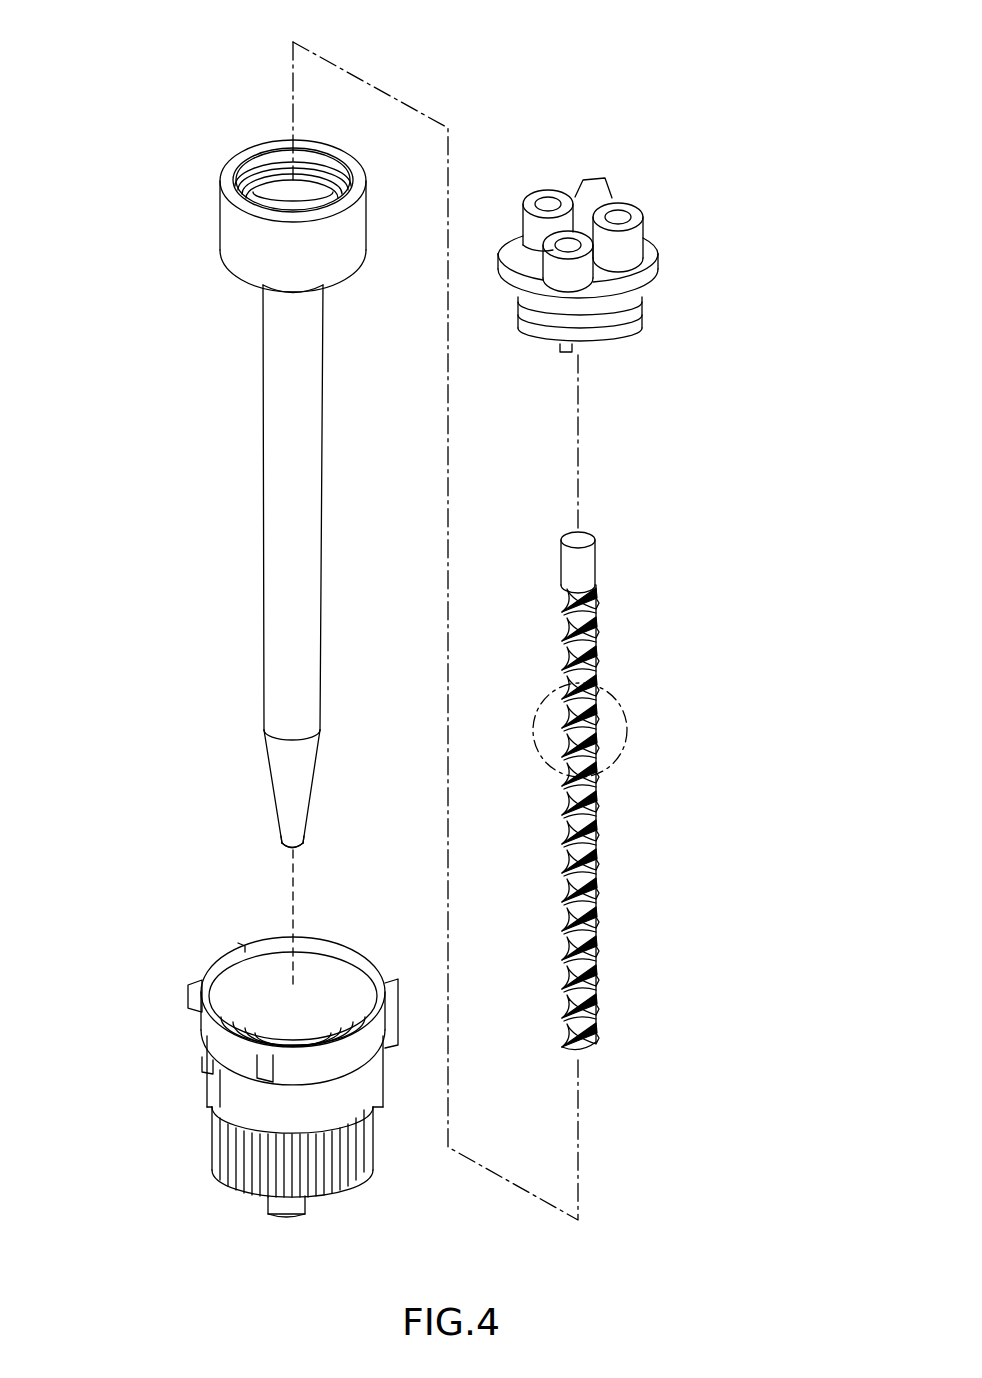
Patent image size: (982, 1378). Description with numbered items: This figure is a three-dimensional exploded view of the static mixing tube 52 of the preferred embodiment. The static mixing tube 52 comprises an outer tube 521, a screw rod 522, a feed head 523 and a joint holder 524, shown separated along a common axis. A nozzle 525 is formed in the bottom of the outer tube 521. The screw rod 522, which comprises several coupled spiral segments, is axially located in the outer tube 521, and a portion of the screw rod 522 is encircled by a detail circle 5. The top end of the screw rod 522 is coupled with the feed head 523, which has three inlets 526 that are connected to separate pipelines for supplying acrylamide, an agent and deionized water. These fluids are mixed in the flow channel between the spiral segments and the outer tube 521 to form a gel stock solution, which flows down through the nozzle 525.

The mixing portion detail 5 is at (620, 762).
The static mixing tube 52 is at (643, 139).
The outer tube 521 is at (266, 428).
The screw rod 522 is at (598, 590).
The feed head 523 is at (652, 280).
The joint holder 524 is at (212, 1128).
The nozzle 525 is at (287, 848).
The inlets 526 is at (545, 194).